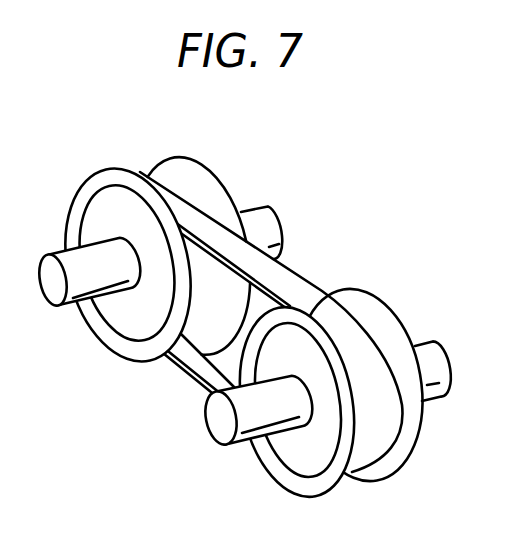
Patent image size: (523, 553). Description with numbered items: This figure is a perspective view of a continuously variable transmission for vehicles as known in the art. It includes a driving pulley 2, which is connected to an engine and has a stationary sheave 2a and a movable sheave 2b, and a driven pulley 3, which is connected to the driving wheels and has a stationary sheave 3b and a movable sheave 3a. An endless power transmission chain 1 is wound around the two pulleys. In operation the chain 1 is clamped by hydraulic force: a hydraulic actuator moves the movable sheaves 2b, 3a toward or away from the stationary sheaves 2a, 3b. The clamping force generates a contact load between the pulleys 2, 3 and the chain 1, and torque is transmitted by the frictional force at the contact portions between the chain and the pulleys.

The endless power transmission chain 1 is at (296, 271).
The driving pulley 2 is at (329, 392).
The stationary sheave 2a is at (378, 310).
The movable sheave 2b is at (284, 455).
The driven pulley 3 is at (158, 250).
The movable sheave 3a is at (187, 169).
The stationary sheave 3b is at (116, 318).